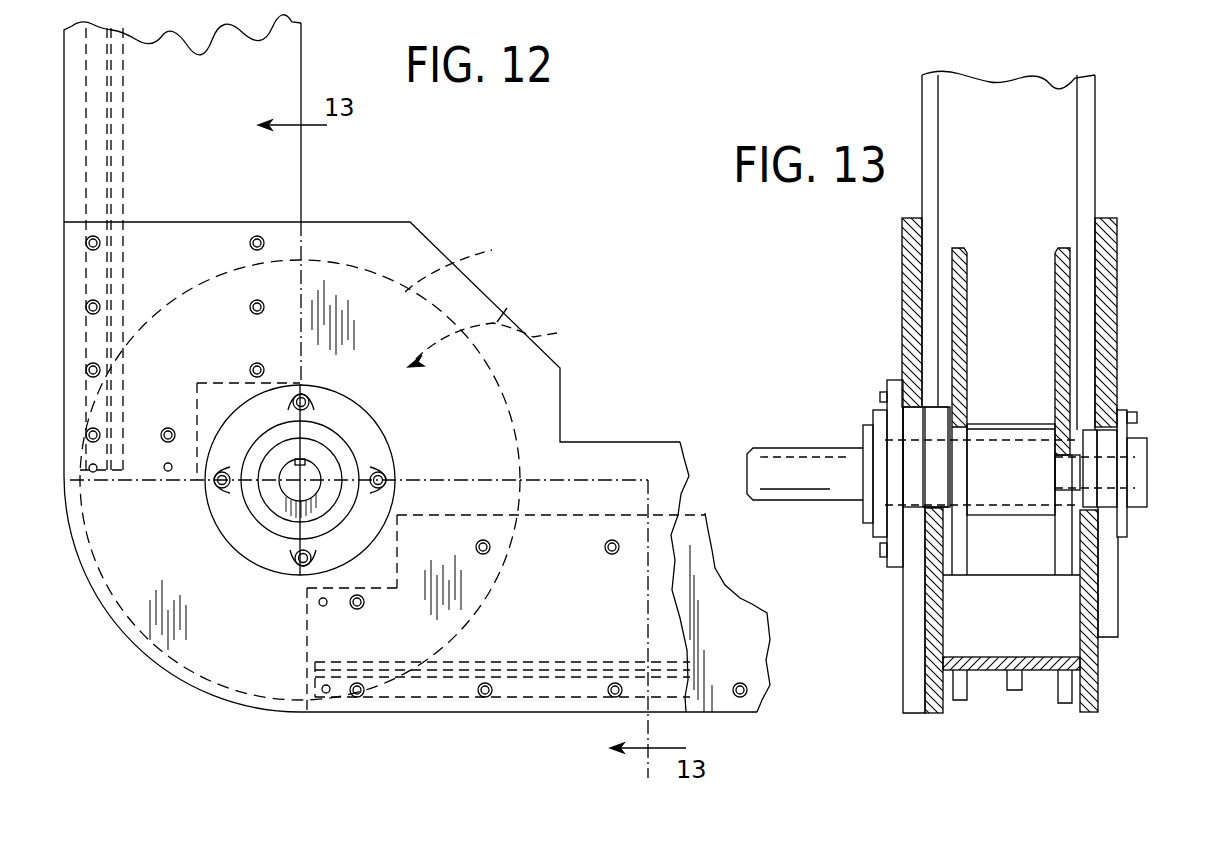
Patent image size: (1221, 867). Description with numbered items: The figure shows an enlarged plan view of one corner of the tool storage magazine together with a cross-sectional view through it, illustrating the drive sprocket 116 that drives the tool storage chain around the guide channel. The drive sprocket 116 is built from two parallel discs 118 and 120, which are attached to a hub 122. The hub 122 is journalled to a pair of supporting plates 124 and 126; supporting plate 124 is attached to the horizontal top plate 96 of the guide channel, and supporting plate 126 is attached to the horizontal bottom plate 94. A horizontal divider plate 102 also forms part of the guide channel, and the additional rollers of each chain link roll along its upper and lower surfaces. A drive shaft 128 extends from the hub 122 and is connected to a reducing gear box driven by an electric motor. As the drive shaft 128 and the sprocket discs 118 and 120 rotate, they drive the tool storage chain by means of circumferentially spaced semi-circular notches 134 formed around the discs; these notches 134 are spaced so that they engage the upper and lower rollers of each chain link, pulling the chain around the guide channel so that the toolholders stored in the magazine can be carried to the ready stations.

In FIG. 12, the horizontal bottom plate 94 is at (282, 52).
In FIG. 13, the horizontal bottom plate 94 is at (1092, 688).
In FIG. 12, the horizontal top plate 96 is at (730, 602).
In FIG. 13, the horizontal top plate 96 is at (924, 714).
In FIG. 13, the horizontal divider plate 102 is at (1015, 703).
In FIG. 12, the drive sprocket 116 is at (474, 326).
In FIG. 13, the sprocket disc 118 is at (953, 248).
In FIG. 13, the sprocket disc 120 is at (1055, 277).
In FIG. 12, the hub 122 is at (333, 463).
In FIG. 13, the hub 122 is at (995, 428).
In FIG. 12, the supporting plate 124 is at (408, 232).
In FIG. 13, the supporting plate 124 is at (1117, 288).
In FIG. 13, the supporting plate 126 is at (902, 305).
In FIG. 13, the drive shaft 128 is at (777, 470).
In FIG. 12, the semi-circular notches 134 is at (577, 333).